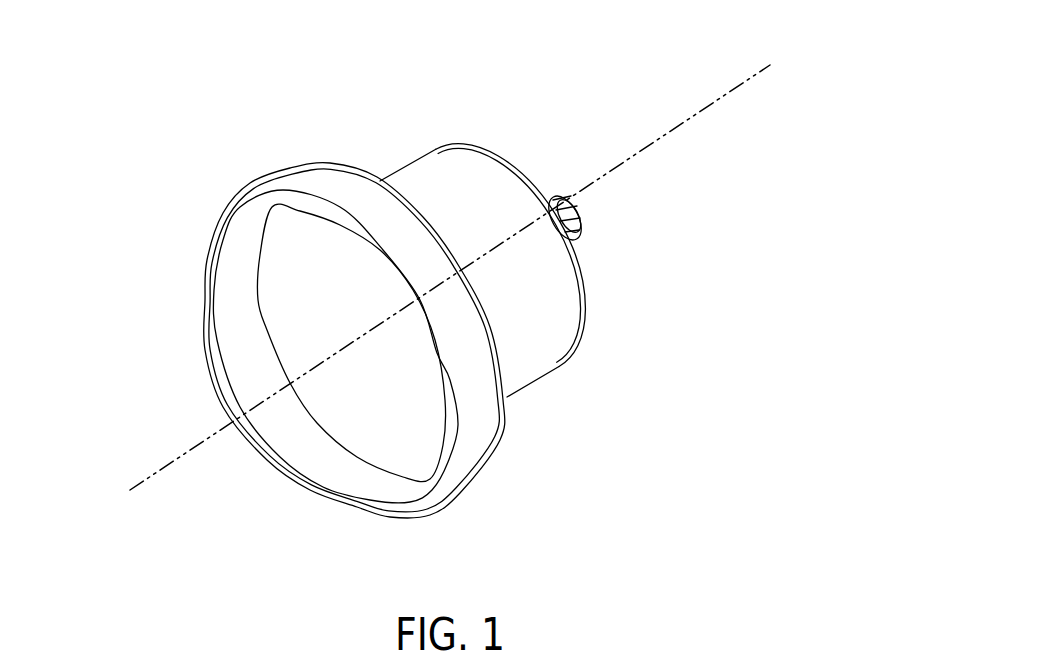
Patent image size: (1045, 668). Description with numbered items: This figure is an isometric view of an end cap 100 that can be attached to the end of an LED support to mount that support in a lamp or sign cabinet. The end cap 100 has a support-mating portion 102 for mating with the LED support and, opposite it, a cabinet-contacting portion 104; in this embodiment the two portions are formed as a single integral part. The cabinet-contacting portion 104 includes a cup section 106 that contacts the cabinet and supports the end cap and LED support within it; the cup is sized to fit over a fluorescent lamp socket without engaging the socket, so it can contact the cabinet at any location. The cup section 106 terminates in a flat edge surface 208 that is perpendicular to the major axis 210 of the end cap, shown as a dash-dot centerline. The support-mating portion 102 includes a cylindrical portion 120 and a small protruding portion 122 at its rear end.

The end cap 100 is at (618, 83).
The support-mating portion 102 is at (540, 178).
The cabinet-contacting portion 104 is at (247, 495).
The cup section 106 is at (272, 178).
The cylindrical portion 120 is at (533, 386).
The protruding portion 122 is at (580, 213).
The flat edge surface 208 is at (206, 312).
The major axis 210 is at (163, 468).